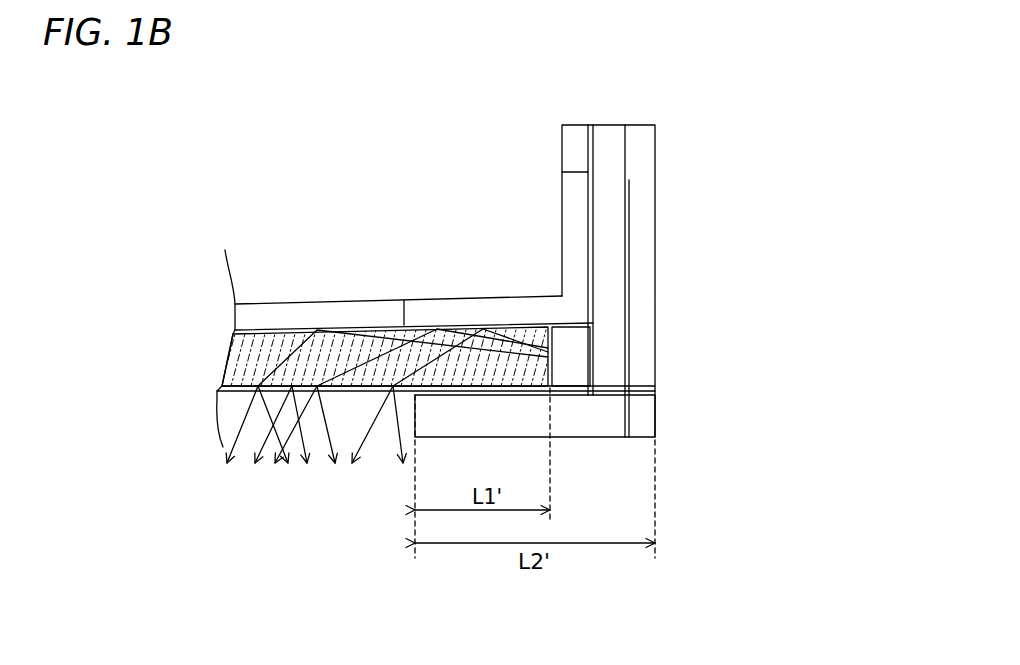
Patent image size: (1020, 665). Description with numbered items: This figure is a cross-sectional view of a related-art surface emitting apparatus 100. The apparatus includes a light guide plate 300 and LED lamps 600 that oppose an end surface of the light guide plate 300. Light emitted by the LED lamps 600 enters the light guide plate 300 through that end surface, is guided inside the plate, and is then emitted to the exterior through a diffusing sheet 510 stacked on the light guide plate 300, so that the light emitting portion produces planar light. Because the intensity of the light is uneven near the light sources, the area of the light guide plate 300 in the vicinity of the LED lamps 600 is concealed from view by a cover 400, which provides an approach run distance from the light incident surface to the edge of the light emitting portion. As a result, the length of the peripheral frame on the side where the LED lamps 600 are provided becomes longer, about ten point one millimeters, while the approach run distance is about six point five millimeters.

The surface emitting apparatus 100 is at (750, 117).
The light guide plate 300 is at (230, 343).
The cover 400 is at (603, 418).
The diffusing sheet 510 is at (222, 389).
The LED lamps 600 is at (578, 356).